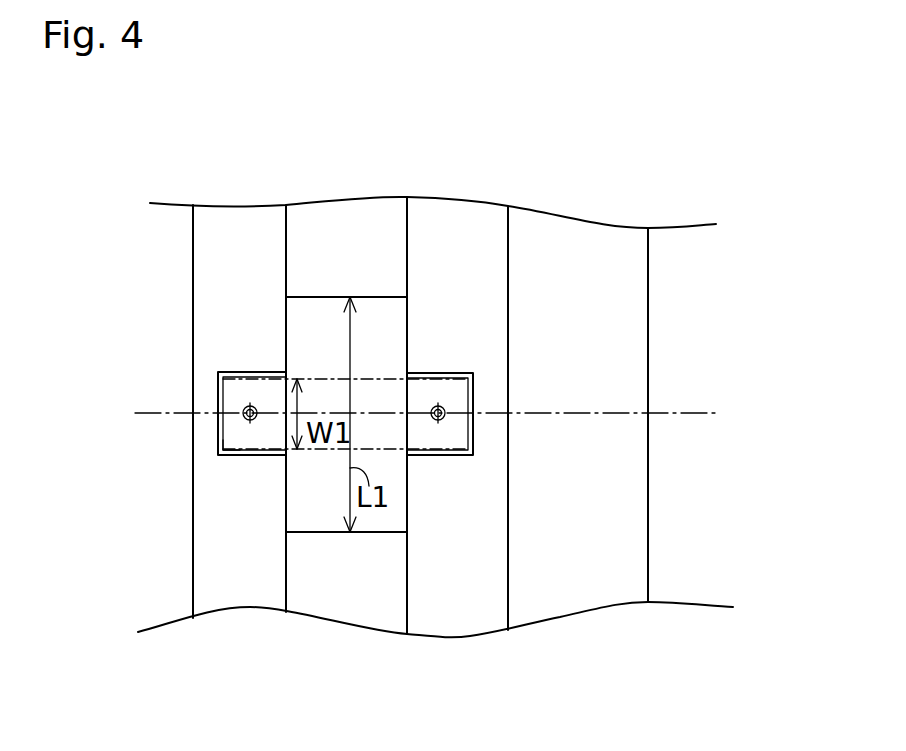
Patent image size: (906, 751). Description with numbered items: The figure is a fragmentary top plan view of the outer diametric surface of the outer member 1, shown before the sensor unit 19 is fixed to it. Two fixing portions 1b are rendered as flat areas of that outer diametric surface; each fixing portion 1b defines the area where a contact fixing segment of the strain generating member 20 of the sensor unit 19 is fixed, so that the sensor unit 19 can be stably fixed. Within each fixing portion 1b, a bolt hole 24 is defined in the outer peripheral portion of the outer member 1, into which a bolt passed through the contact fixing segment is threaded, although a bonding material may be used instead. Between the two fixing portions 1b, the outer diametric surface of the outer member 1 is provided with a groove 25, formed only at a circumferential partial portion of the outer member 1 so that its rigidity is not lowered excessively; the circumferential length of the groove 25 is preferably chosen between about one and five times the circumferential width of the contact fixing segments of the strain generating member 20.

The outer member 1 is at (178, 275).
The fixing portion 1b is at (240, 388).
The sensor unit 19 is at (375, 368).
The strain generating member 20 is at (232, 455).
The bolt hole 24 is at (245, 421).
The groove 25 is at (337, 320).